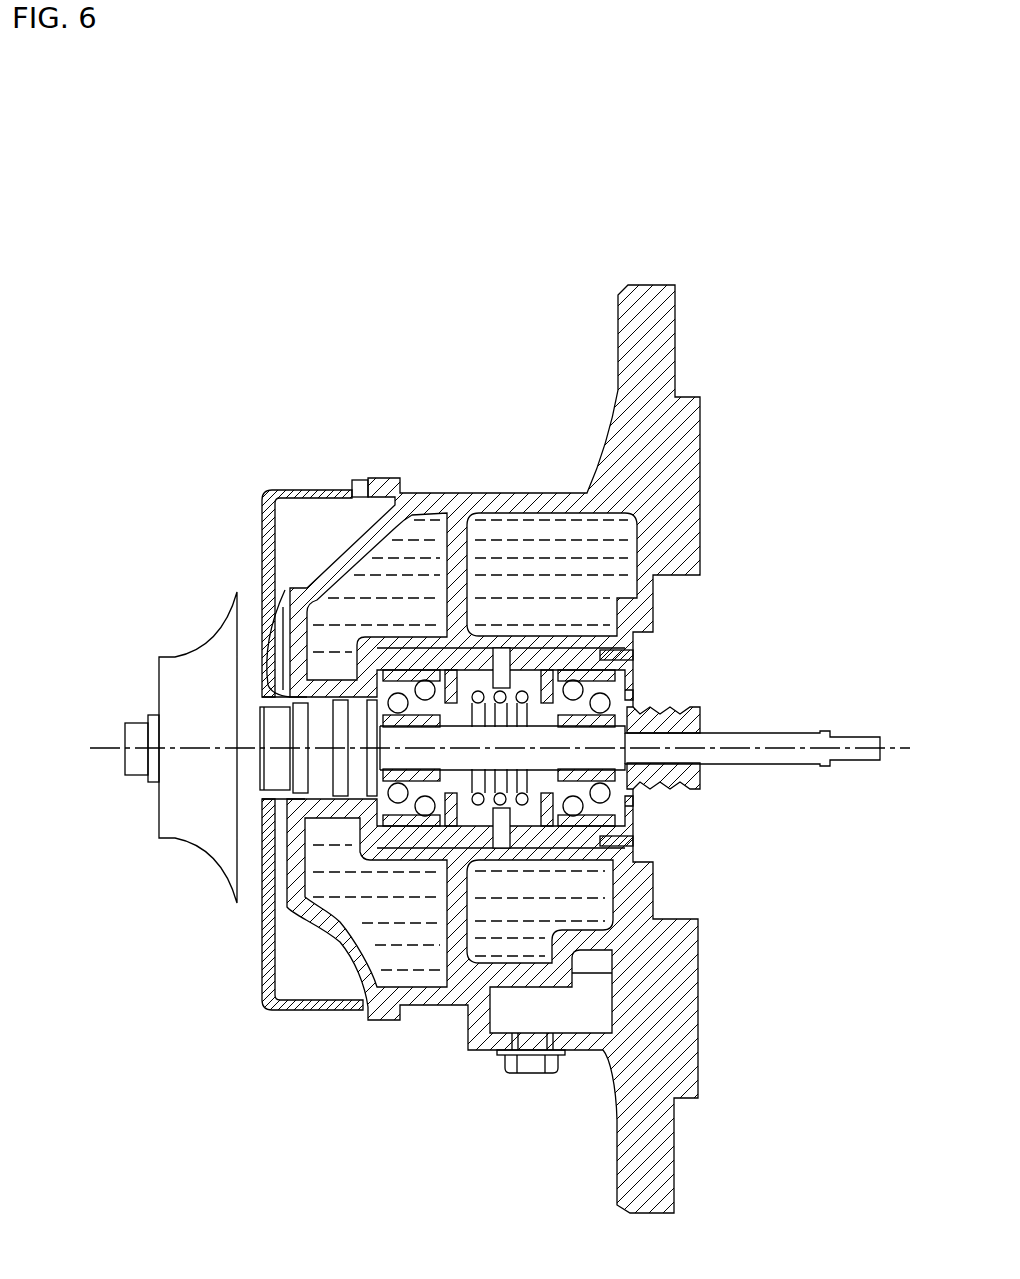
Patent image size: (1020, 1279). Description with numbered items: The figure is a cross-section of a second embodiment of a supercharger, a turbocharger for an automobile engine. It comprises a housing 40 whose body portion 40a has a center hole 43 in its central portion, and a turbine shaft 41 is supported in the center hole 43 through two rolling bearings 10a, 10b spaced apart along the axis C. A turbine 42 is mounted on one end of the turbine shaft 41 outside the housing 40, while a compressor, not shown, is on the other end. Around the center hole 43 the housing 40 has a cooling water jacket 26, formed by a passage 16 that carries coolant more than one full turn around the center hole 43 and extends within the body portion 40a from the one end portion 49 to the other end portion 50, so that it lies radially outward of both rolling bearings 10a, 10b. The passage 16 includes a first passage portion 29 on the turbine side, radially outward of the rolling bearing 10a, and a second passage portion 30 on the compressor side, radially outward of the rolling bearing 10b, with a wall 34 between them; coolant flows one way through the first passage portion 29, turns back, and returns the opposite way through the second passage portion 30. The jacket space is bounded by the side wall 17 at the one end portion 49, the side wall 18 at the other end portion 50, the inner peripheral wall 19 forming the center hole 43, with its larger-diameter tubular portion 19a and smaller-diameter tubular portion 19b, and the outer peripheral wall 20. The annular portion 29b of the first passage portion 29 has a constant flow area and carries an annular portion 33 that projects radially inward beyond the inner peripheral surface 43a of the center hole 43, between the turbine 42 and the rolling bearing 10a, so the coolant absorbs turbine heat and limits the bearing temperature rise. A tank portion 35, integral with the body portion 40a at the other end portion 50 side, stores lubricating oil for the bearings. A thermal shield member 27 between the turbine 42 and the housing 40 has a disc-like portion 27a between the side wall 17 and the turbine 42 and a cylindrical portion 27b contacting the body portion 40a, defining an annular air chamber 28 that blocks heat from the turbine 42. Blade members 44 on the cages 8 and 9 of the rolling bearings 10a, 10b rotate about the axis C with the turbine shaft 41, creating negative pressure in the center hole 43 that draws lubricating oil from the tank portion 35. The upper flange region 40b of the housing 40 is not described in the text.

The cage 8 is at (657, 808).
The cage 9 is at (662, 855).
The rolling bearing 10a is at (287, 920).
The rolling bearing 10b is at (624, 812).
The passage 16 is at (463, 588).
The side wall 17 is at (272, 613).
The side wall 18 is at (663, 630).
The inner peripheral wall 19 is at (400, 600).
The larger-diameter tubular portion 19a is at (263, 502).
The smaller-diameter tubular portion 19b is at (290, 718).
The outer peripheral wall 20 is at (553, 502).
The cooling water jacket 26 is at (430, 628).
The thermal shield member 27 is at (262, 995).
The disc-like portion 27a is at (290, 832).
The cylindrical portion 27b is at (347, 937).
The air chamber 28 is at (303, 952).
The first passage portion 29 is at (283, 560).
The annular portion 29b is at (378, 910).
The second passage portion 30 is at (522, 537).
The annular portion 33 is at (290, 683).
The wall 34 is at (457, 547).
The tank portion 35 is at (492, 917).
The housing 40 is at (706, 470).
The body portion 40a is at (492, 500).
The flange upper portion 40b is at (678, 333).
The turbine shaft 41 is at (808, 767).
The turbine 42 is at (190, 857).
The center hole 43 is at (641, 698).
The inner peripheral surface 43a is at (437, 830).
The blade members 44 is at (640, 690).
The one end portion 49 is at (295, 637).
The other end portion 50 is at (657, 610).
The axis C is at (823, 723).